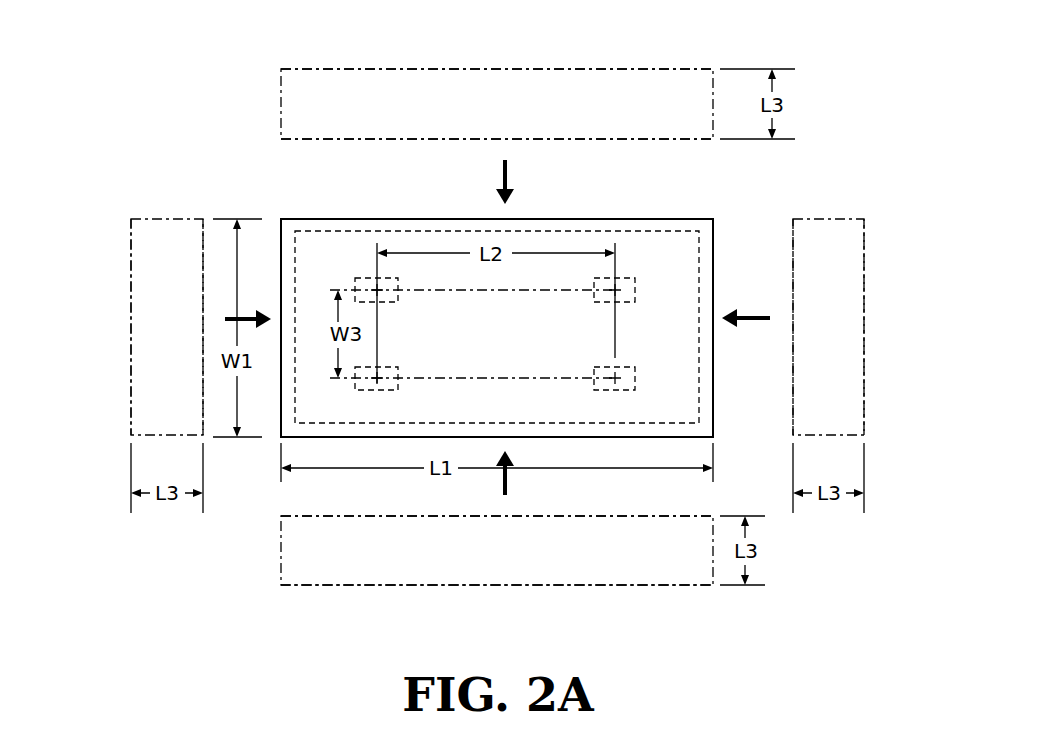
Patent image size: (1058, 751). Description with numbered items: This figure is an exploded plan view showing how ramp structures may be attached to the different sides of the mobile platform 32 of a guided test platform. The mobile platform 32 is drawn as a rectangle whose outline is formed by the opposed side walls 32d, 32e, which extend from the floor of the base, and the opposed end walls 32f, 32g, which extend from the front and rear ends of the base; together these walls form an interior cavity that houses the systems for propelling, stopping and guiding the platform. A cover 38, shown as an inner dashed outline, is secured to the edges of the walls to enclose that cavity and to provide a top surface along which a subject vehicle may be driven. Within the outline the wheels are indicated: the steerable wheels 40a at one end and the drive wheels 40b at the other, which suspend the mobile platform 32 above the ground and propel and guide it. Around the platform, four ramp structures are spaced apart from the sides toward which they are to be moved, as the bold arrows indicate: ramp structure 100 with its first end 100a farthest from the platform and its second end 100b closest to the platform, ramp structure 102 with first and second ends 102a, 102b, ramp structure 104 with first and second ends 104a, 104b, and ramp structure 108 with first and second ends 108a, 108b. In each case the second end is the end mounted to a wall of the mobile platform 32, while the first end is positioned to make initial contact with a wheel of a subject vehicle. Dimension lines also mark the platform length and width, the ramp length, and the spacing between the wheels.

The mobile platform 32 is at (724, 246).
The side wall 32d is at (560, 437).
The side wall 32e is at (556, 219).
The end wall 32f is at (281, 283).
The end wall 32g is at (705, 284).
The cover 38 is at (318, 272).
The steerable wheels 40a is at (392, 300).
The drive wheels 40b is at (596, 293).
The ramp structure 100 is at (131, 380).
The first end 100a is at (131, 322).
The second end 100b is at (203, 398).
The ramp structure 102 is at (840, 380).
The first end 102a is at (864, 273).
The second end 102b is at (793, 370).
The ramp structure 104 is at (408, 564).
The first end 104a is at (548, 585).
The second end 104b is at (422, 512).
The ramp structure 108 is at (405, 82).
The first end 108a is at (600, 69).
The second end 108b is at (450, 139).